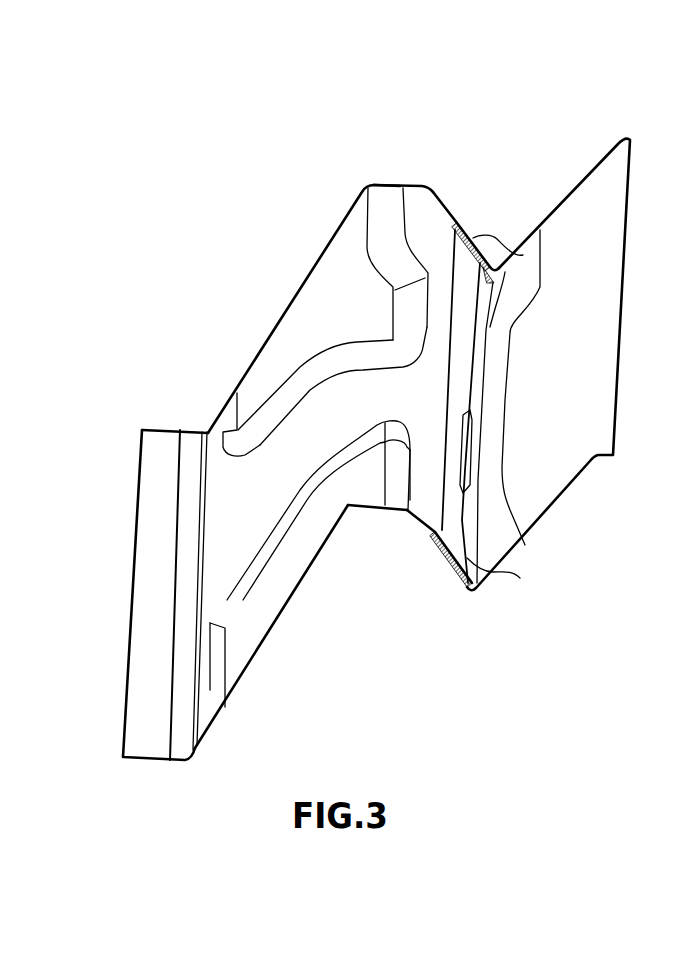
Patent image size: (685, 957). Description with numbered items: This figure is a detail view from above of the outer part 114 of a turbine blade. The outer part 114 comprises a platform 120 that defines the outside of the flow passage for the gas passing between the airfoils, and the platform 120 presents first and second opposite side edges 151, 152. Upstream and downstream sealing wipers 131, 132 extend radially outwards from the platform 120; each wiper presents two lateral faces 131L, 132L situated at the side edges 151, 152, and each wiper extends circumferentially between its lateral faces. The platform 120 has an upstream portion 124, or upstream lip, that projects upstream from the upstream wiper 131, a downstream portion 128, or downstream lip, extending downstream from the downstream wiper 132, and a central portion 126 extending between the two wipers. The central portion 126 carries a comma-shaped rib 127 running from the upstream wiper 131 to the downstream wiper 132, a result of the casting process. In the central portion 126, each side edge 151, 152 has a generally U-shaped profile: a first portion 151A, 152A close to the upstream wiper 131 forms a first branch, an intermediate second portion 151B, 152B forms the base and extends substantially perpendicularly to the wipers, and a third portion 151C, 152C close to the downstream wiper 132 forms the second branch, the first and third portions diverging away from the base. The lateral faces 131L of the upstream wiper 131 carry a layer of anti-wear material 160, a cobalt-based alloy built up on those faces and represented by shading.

The outer part 114 is at (333, 152).
The first side edge 151 is at (337, 226).
The first portion of first side edge 151A is at (451, 213).
The second portion of first side edge 151B is at (398, 184).
The third portion of first side edge 151C is at (329, 246).
The lateral faces of upstream wiper 131L is at (480, 227).
The layer of anti-wear material 160 is at (523, 255).
The platform 120 is at (307, 312).
The comma-shaped rib 127 is at (317, 417).
The lateral faces of downstream wiper 132L is at (192, 428).
The upstream sealing wiper 131 is at (458, 385).
The upstream portion (upstream lip) 124 is at (597, 380).
The downstream sealing wiper 132 is at (192, 543).
The downstream portion (downstream lip) 128 is at (145, 640).
The second side edge 152 is at (323, 555).
The first portion of second side edge 152A is at (433, 540).
The second portion of second side edge 152B is at (376, 508).
The third portion of second side edge 152C is at (288, 600).
The central portion 126 is at (247, 640).